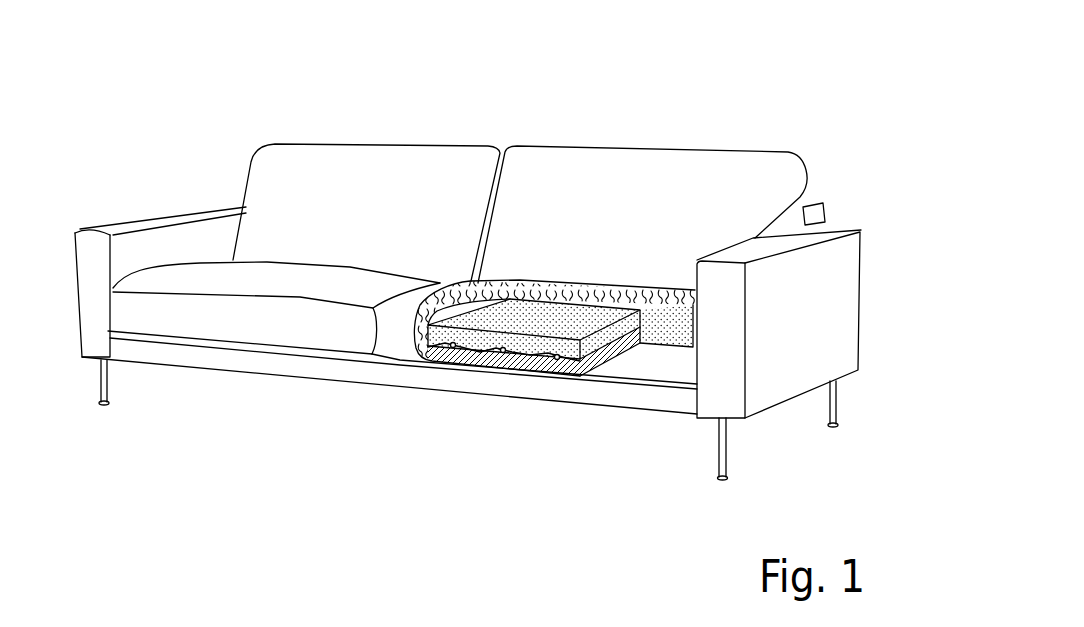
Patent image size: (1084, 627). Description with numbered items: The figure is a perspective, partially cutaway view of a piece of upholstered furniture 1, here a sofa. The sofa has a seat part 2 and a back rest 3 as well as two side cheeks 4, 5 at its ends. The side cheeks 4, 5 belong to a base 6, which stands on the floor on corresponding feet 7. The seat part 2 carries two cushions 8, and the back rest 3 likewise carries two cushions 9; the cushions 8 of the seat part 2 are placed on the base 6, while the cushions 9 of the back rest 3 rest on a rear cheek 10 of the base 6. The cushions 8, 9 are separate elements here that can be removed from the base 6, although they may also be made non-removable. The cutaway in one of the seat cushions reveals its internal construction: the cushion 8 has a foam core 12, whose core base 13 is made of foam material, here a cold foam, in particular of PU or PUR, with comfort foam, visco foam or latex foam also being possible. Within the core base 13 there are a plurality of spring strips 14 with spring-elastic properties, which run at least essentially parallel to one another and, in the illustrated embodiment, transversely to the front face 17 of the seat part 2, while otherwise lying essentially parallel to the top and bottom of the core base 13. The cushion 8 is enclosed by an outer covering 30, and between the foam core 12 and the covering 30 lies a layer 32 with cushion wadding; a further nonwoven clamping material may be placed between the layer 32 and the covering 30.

The piece of upholstered furniture 1 is at (655, 81).
The seat part 2 is at (338, 441).
The back rest 3 is at (847, 200).
The side cheek 4 is at (165, 233).
The side cheek 5 is at (845, 268).
The base 6 is at (192, 358).
The feet 7 is at (100, 384).
The cushion 8 is at (313, 327).
The cushion 9 is at (400, 170).
The rear cheek 10 is at (813, 213).
The foam core 12 is at (529, 370).
The core base 13 is at (587, 350).
The spring strips 14 is at (490, 350).
The front face 17 is at (250, 328).
The outer covering 30 is at (403, 345).
The layer 32 is at (473, 282).